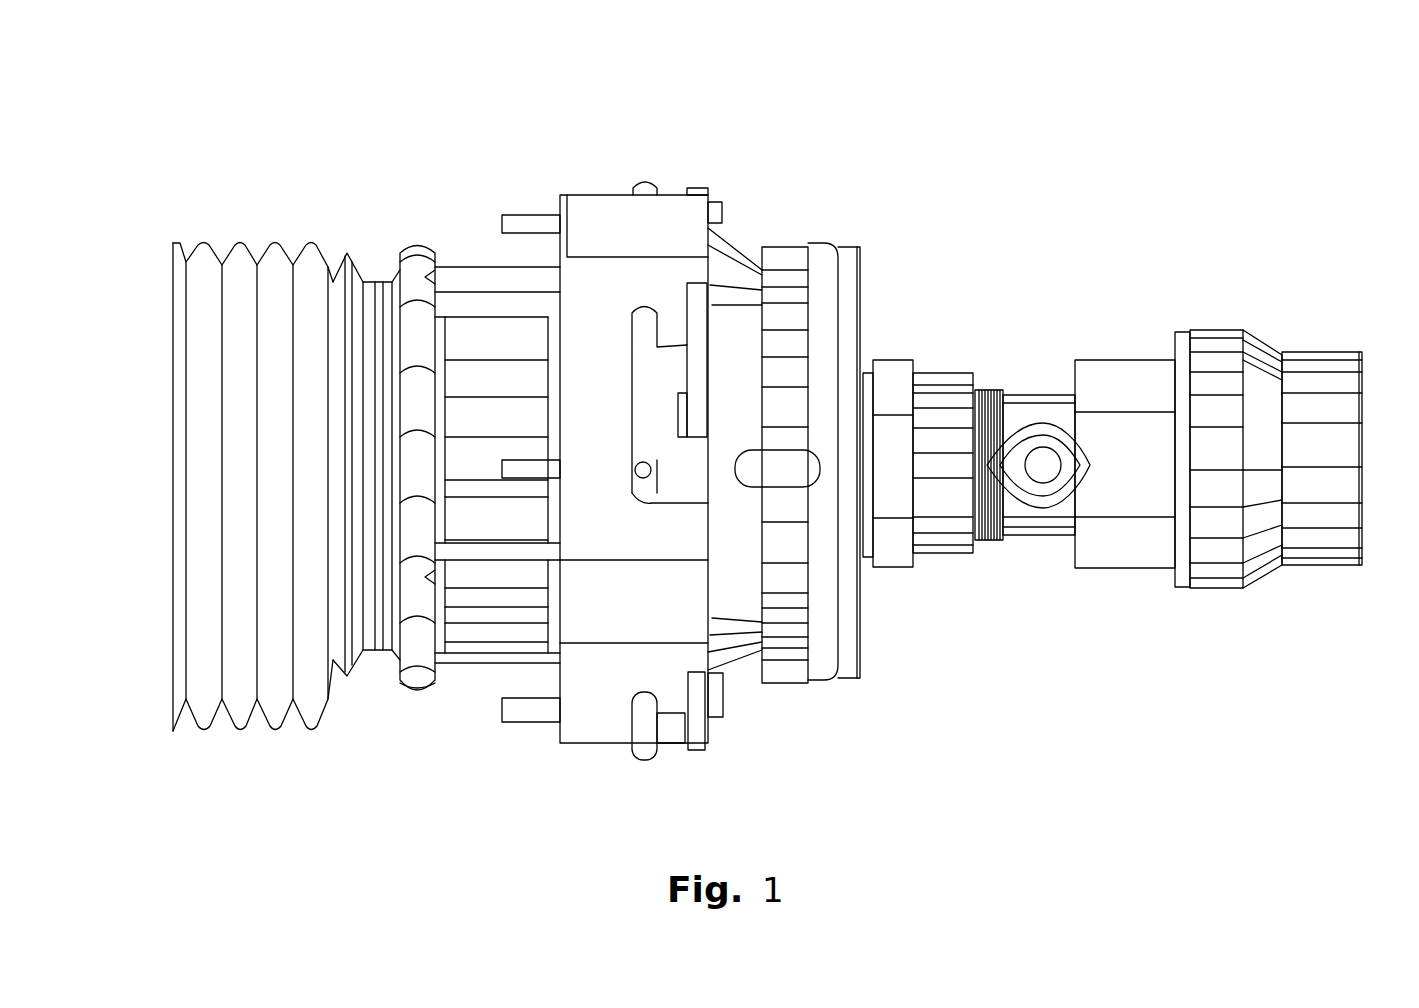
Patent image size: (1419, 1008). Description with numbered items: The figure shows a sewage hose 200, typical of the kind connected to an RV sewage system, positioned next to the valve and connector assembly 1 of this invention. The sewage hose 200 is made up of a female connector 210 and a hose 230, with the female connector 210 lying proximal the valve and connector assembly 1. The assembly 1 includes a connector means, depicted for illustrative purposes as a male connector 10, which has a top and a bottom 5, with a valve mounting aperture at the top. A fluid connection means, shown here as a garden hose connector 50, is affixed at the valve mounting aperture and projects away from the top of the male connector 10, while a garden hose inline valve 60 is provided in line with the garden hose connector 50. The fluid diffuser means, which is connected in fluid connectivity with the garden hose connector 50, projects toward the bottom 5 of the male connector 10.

The valve and connector assembly 1 is at (1020, 165).
The bottom 5 is at (557, 732).
The male connector 10 is at (738, 268).
The garden hose connector 50 is at (1107, 387).
The garden hose inline valve 60 is at (1013, 460).
The sewage hose 200 is at (623, 131).
The female connector 210 is at (590, 300).
The hose 230 is at (199, 241).